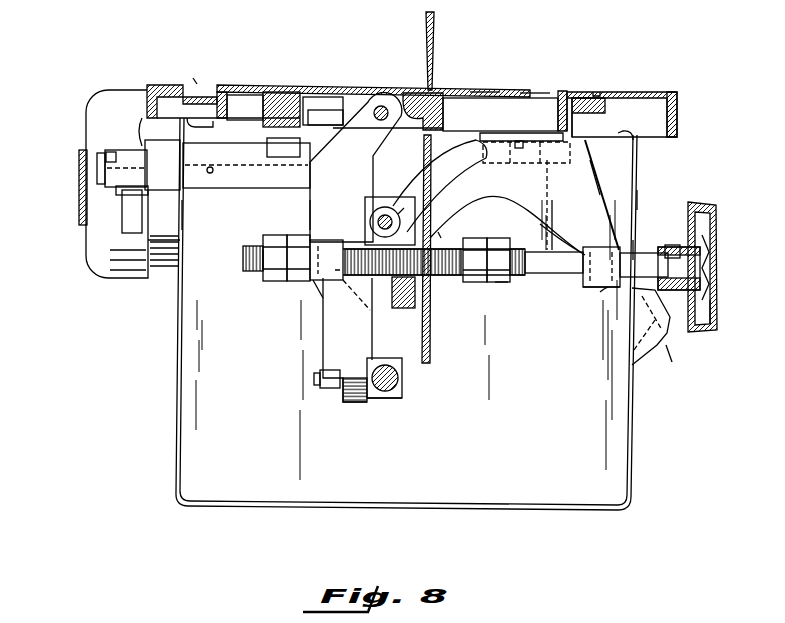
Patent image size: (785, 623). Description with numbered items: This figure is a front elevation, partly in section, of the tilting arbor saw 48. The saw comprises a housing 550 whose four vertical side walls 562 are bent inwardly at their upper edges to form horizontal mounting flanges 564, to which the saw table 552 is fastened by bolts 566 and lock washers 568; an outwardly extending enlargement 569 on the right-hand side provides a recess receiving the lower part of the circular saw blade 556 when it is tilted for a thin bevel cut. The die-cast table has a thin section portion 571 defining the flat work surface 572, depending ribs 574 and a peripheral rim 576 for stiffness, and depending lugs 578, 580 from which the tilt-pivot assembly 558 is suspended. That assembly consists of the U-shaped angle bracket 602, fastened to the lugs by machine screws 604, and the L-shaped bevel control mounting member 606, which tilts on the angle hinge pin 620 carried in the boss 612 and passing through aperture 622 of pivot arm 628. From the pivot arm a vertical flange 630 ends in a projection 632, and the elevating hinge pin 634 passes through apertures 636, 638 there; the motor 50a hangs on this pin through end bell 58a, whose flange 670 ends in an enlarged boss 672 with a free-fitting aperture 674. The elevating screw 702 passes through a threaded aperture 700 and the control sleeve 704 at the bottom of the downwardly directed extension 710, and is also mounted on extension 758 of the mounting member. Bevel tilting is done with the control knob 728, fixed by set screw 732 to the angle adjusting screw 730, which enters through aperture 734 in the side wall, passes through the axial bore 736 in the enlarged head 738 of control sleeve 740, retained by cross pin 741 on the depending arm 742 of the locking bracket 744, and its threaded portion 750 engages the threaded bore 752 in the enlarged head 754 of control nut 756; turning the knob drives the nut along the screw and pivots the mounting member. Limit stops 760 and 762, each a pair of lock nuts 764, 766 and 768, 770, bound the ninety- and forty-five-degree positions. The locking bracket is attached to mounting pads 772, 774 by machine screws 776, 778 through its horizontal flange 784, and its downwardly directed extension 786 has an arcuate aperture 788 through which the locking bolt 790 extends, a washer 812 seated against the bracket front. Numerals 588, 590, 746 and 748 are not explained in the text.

The tilting arbor saw 48 is at (192, 77).
The motor 50a is at (74, 208).
The end bell 58a is at (121, 280).
The housing 550 is at (670, 193).
The saw table 552 is at (660, 87).
The circular saw blade 556 is at (436, 60).
The tilt-pivot assembly 558 is at (306, 213).
The side walls 562 is at (176, 366).
The mounting flanges 564 is at (206, 126).
The bolts 566 is at (615, 135).
The lock washers 568 is at (648, 168).
The enlargement 569 is at (704, 366).
The thin section portion 571 is at (480, 91).
The work surface 572 is at (505, 92).
The depending ribs 574 is at (214, 84).
The peripheral rim 576 is at (152, 85).
The depending lug 578 is at (263, 90).
The depending lug 580 is at (445, 116).
The notch 588 is at (218, 95).
The notch 590 is at (594, 92).
The angle bracket 602 is at (283, 132).
The machine screws 604 is at (442, 155).
The bevel control mounting member 606 is at (315, 298).
The boss 612 is at (343, 103).
The angle hinge pin 620 is at (402, 93).
The aperture 622 is at (348, 100).
The pivot arm 628 is at (374, 100).
The vertical flange 630 is at (152, 196).
The projection 632 is at (142, 134).
The elevating hinge pin 634 is at (104, 162).
The aperture 636 is at (202, 215).
The aperture 638 is at (367, 221).
The flange 670 is at (113, 205).
The enlarged boss 672 is at (105, 180).
The aperture 674 is at (134, 128).
The threaded aperture 700 is at (385, 392).
The elevating screw 702 is at (398, 385).
The control sleeve 704 is at (403, 365).
The downwardly directed extension 710 is at (331, 348).
The control knob 728 is at (718, 265).
The angle adjusting screw 730 is at (717, 298).
The set screw 732 is at (676, 245).
The aperture 734 is at (637, 252).
The axial bore 736 is at (604, 290).
The enlarged head 738 is at (600, 292).
The control sleeve 740 is at (600, 238).
The cross pin 741 is at (580, 328).
The depending arm 742 is at (552, 235).
The locking bracket 744 is at (500, 207).
The collar 746 is at (584, 283).
The bracket 748 is at (675, 326).
The threaded portion 750 is at (473, 288).
The threaded bore 752 is at (373, 317).
The enlarged head 754 is at (246, 248).
The control nut 756 is at (332, 286).
The extension 758 is at (609, 177).
The limit stop 760 is at (486, 285).
The limit stop 762 is at (260, 234).
The lock nut 764 is at (500, 285).
The lock nut 766 is at (505, 283).
The lock nut 768 is at (295, 281).
The lock nut 770 is at (266, 283).
The mounting pad 772 is at (518, 140).
The mounting pad 774 is at (566, 100).
The machine screw 776 is at (505, 138).
The machine screw 778 is at (552, 217).
The horizontal flange 784 is at (588, 117).
The downwardly directed extension 786 is at (450, 240).
The arcuate aperture 788 is at (432, 186).
The locking bolt 790 is at (372, 224).
The washer 812 is at (408, 199).